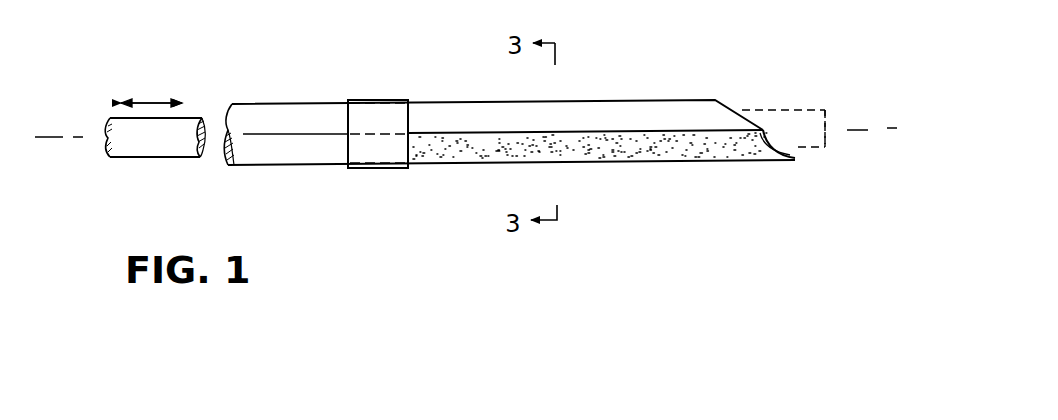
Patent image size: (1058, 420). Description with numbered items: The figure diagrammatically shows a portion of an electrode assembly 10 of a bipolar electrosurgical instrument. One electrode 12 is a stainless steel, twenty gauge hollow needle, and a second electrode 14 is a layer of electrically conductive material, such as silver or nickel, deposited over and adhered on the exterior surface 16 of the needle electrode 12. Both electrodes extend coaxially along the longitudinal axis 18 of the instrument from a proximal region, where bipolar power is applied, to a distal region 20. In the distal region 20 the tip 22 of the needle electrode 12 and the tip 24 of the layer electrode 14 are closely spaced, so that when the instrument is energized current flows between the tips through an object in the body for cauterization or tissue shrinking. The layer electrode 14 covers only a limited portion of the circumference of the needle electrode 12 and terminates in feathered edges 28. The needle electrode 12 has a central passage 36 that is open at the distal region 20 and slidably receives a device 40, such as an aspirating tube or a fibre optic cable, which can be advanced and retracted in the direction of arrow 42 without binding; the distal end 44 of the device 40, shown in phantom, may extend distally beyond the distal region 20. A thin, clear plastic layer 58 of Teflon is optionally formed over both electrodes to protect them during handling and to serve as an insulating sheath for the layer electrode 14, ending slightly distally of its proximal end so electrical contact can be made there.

The electrode assembly 10 is at (614, 36).
The electrode 12 is at (442, 110).
The second electrode 14 is at (451, 164).
The exterior surface 16 is at (490, 128).
The longitudinal axis 18 is at (891, 127).
The distal region 20 is at (800, 84).
The tip 22 is at (809, 157).
The tip 24 is at (794, 164).
The edges 28 is at (583, 132).
The central passage 36 is at (222, 150).
The device 40 is at (155, 158).
The arrow 42 is at (153, 100).
The distal end 44 is at (824, 104).
The clear plastic layer 58 is at (375, 97).